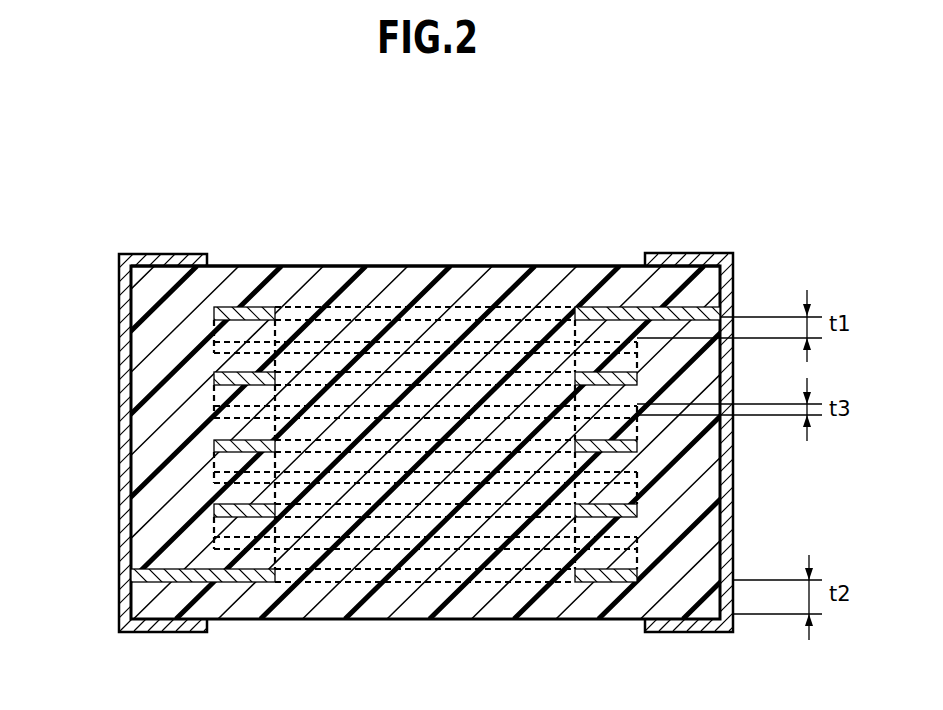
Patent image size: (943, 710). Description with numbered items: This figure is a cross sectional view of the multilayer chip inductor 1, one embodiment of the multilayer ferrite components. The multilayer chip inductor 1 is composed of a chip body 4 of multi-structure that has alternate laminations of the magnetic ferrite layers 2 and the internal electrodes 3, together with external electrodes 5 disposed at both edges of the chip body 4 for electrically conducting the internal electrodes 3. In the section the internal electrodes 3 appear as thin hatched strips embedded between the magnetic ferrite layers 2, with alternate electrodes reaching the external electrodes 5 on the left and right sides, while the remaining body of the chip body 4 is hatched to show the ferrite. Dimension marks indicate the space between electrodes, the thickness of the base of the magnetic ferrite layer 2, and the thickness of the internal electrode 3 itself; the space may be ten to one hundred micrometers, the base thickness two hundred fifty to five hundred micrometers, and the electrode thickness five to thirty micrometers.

The multilayer chip inductor 1 is at (545, 252).
The magnetic ferrite layer 2 is at (420, 266).
The internal electrode 3 is at (640, 506).
The chip body 4 is at (340, 266).
The external electrode 5 is at (146, 254).